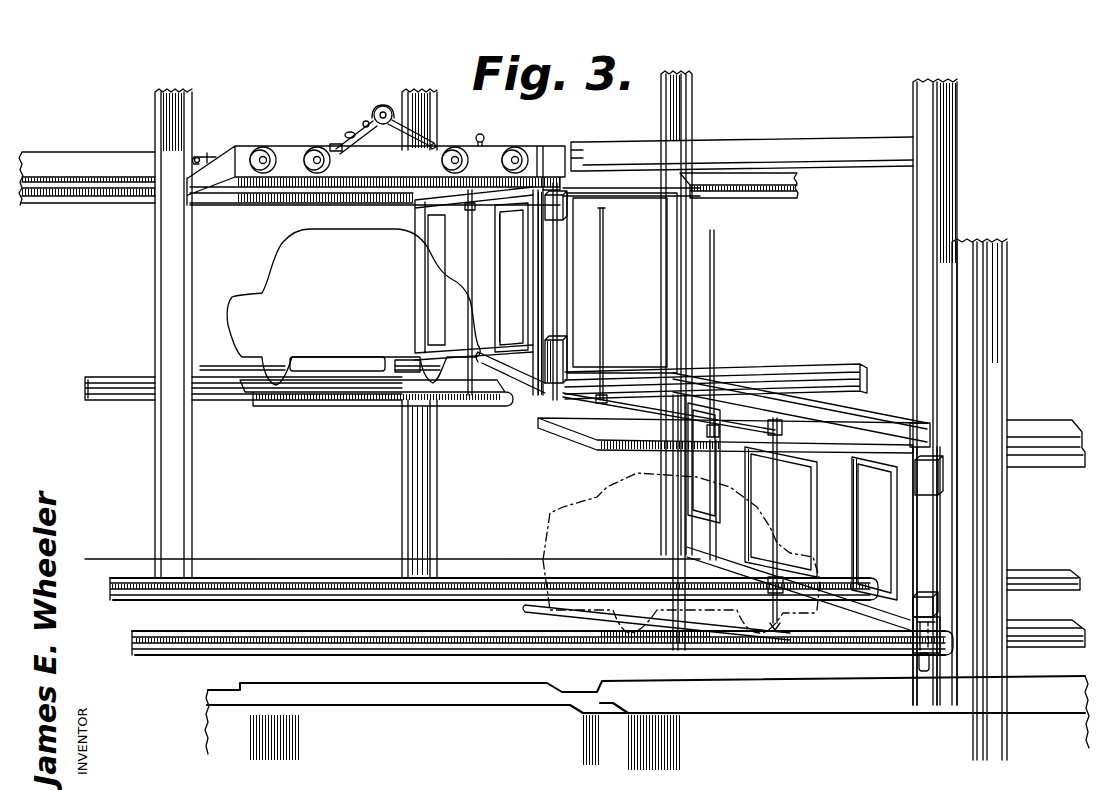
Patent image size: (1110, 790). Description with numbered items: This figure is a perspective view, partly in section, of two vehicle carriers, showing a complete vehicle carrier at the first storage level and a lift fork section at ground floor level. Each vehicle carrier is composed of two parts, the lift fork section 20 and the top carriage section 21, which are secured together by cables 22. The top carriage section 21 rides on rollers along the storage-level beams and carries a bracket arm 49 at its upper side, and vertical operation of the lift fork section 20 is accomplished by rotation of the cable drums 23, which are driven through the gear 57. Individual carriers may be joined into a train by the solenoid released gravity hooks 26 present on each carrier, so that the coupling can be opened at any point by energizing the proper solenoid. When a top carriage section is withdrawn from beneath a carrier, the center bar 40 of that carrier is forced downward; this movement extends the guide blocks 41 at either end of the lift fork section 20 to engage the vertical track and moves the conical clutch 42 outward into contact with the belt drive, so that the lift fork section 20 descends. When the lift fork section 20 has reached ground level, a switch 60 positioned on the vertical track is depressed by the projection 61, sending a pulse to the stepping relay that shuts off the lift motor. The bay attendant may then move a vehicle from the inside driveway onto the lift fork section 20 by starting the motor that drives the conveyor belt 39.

The lift fork section 20 is at (552, 278).
The top carriage section 21 is at (280, 141).
The cables 22 is at (602, 288).
The cable drums 23 is at (352, 132).
The solenoid released gravity hooks 26 is at (215, 153).
The conveyor belt 39 is at (244, 653).
The center bar 40 is at (474, 275).
The guide blocks 41 is at (559, 221).
The conical clutch 42 is at (387, 105).
The bracket arm 49 is at (391, 132).
The gear 57 is at (365, 120).
The switch 60 is at (925, 668).
The projection 61 is at (933, 649).